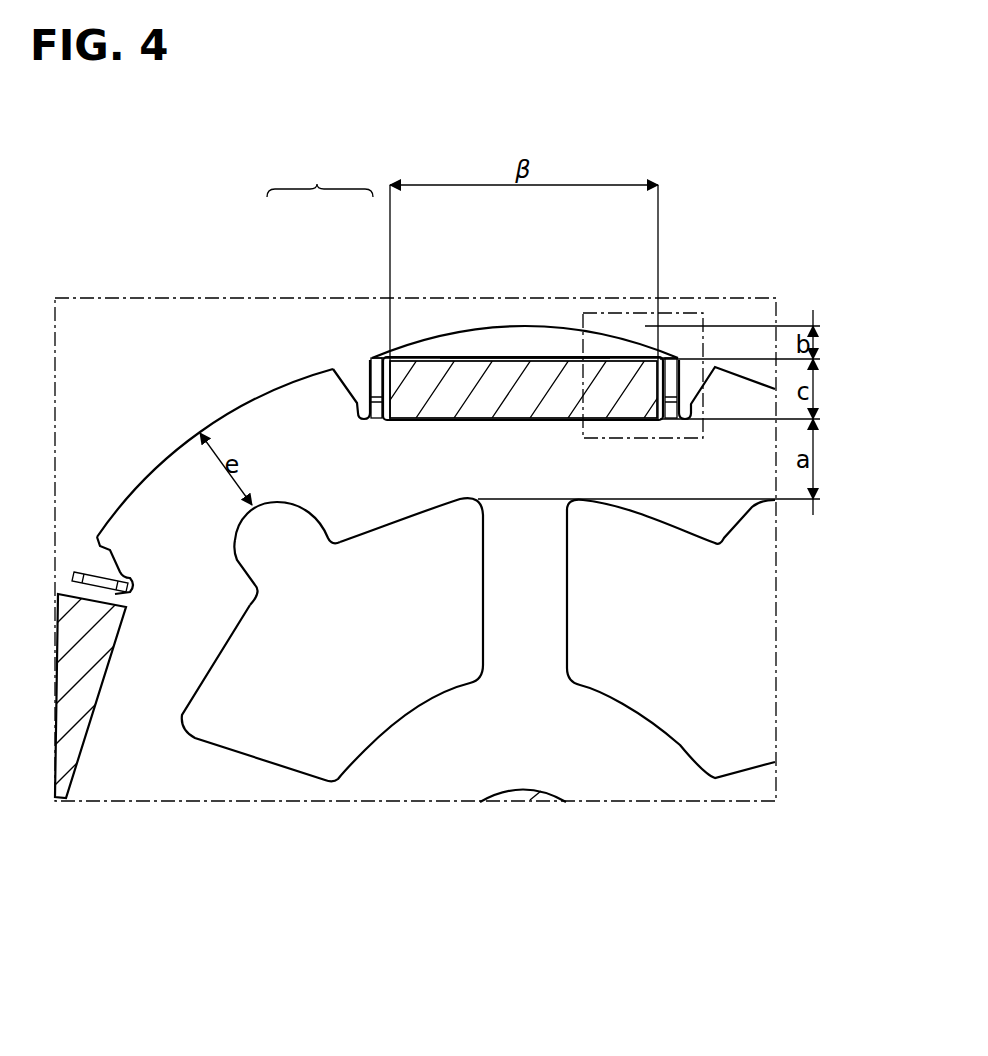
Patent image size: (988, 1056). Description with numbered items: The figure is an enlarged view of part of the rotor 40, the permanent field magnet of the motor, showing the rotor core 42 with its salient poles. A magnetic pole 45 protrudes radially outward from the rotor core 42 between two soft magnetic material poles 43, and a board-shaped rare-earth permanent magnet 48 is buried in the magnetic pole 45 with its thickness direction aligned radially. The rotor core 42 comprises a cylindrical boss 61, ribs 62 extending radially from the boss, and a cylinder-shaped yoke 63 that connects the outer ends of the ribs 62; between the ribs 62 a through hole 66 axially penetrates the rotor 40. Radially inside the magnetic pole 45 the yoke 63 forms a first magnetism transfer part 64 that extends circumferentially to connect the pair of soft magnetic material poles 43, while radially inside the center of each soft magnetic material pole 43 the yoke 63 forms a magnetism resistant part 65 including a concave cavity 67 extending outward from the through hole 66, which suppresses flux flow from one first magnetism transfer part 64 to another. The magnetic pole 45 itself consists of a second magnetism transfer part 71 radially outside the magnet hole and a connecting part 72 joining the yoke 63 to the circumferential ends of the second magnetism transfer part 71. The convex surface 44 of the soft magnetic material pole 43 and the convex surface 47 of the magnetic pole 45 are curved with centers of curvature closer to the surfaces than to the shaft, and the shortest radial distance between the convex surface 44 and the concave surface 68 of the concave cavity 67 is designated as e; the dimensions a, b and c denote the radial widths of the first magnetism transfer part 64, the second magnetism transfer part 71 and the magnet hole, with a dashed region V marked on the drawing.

The rotor 40 is at (160, 413).
The rotor core 42 is at (428, 773).
The soft magnetic material pole 43 is at (150, 497).
The convex surface 44 is at (163, 455).
The magnetic pole 45 is at (460, 328).
The convex surface 47 is at (505, 327).
The permanent magnet 48 is at (548, 380).
The cylindrical boss 61 is at (623, 748).
The rib 62 is at (535, 587).
The yoke 63 is at (320, 177).
The first magnetism transfer part 64 is at (375, 357).
The magnetism resistant part 65 is at (288, 502).
The through hole 66 is at (278, 685).
The concave cavity 67 is at (272, 525).
The concave surface 68 is at (238, 513).
The second magnetism transfer part 71 is at (527, 340).
The connecting part 72 is at (372, 382).
The detail view region V is at (623, 312).